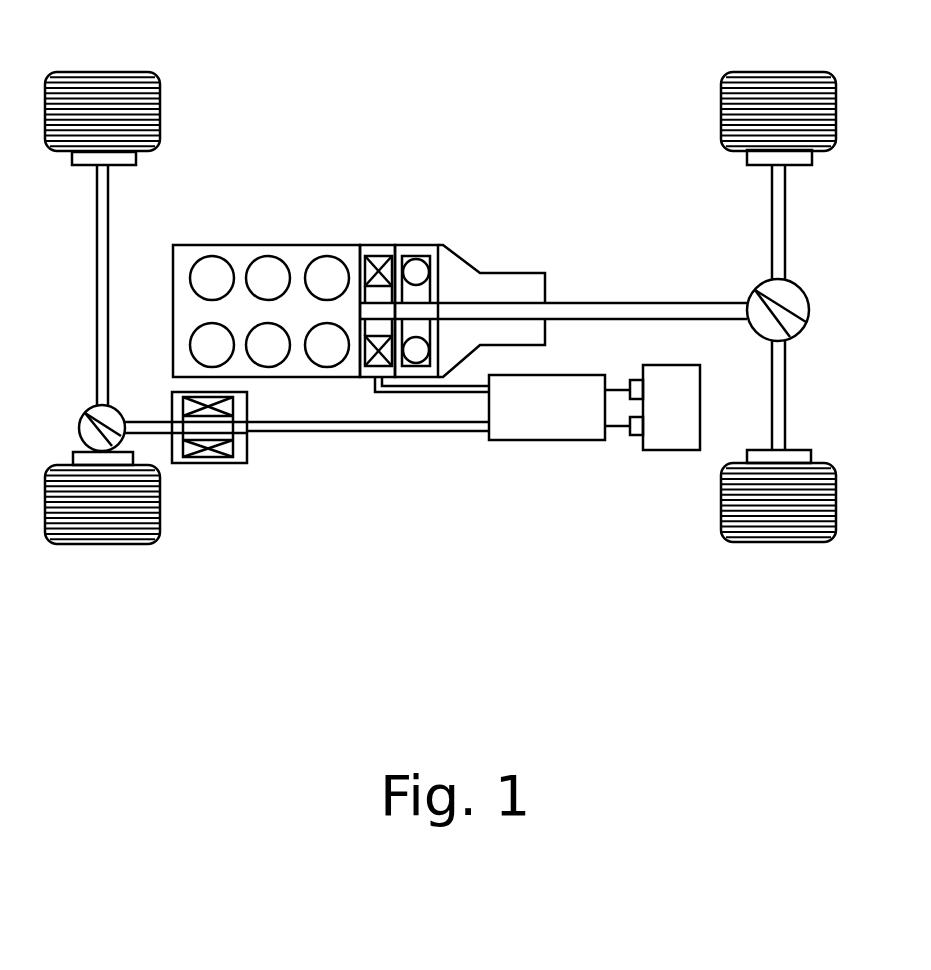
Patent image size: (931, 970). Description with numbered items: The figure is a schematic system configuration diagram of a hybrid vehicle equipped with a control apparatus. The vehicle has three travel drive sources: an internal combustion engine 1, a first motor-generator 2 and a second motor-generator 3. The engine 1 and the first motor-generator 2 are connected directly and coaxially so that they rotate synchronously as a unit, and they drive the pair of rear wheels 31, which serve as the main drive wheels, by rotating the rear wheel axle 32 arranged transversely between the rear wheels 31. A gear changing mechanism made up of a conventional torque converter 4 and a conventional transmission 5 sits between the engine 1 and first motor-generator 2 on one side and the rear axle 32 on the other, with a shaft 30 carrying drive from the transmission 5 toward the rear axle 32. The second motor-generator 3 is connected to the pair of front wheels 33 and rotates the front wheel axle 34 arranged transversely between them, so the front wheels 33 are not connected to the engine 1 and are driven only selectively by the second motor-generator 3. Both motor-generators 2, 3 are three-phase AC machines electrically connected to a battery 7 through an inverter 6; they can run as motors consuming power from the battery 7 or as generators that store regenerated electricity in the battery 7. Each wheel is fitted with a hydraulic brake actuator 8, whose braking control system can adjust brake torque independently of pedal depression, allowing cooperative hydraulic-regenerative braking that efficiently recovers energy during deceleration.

The internal combustion engine 1 is at (242, 248).
The first motor-generator 2 is at (378, 250).
The second motor-generator 3 is at (218, 463).
The torque converter 4 is at (424, 250).
The transmission 5 is at (508, 275).
The inverter 6 is at (545, 440).
The battery 7 is at (673, 450).
The hydraulic brake actuator 8 is at (76, 165).
The propeller shaft 30 is at (641, 303).
The rear wheels 31 is at (778, 72).
The rear wheel axle 32 is at (786, 243).
The front wheels 33 is at (100, 72).
The front wheel axle 34 is at (97, 287).